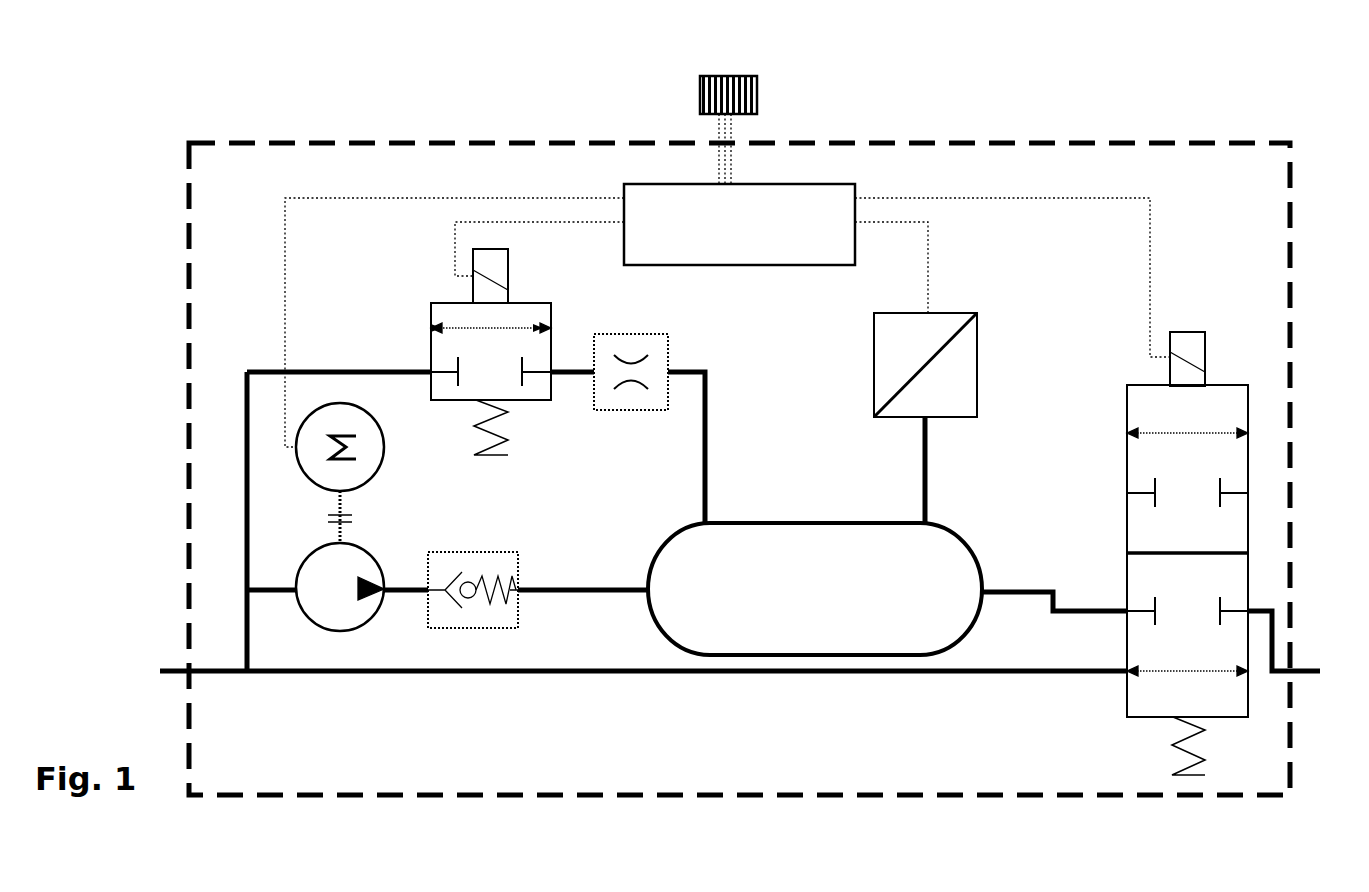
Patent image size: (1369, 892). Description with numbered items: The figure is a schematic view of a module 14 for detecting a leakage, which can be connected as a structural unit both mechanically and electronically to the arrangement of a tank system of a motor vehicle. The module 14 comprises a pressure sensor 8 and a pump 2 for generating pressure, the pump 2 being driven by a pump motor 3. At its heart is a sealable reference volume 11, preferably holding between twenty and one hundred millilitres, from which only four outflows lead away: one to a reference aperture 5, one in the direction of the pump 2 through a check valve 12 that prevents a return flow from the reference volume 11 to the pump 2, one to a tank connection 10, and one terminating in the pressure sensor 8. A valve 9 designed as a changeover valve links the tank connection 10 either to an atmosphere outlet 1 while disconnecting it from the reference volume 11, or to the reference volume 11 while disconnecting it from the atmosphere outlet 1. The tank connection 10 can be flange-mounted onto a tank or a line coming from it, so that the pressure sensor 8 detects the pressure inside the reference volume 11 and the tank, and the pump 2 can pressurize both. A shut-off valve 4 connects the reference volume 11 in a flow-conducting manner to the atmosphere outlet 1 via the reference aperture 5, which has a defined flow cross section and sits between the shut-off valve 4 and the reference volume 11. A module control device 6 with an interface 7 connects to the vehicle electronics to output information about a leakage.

The atmosphere outlet 1 is at (162, 671).
The pump 2 is at (298, 565).
The pump motor 3 is at (296, 466).
The shut-off valve 4 is at (431, 303).
The reference aperture 5 is at (594, 334).
The module control device 6 is at (770, 265).
The interface 7 is at (700, 93).
The pressure sensor 8 is at (953, 308).
The changeover valve 9 is at (1219, 385).
The tank connection 10 is at (1322, 671).
The reference volume 11 is at (857, 640).
The check valve 12 is at (495, 630).
The module 14 is at (185, 140).